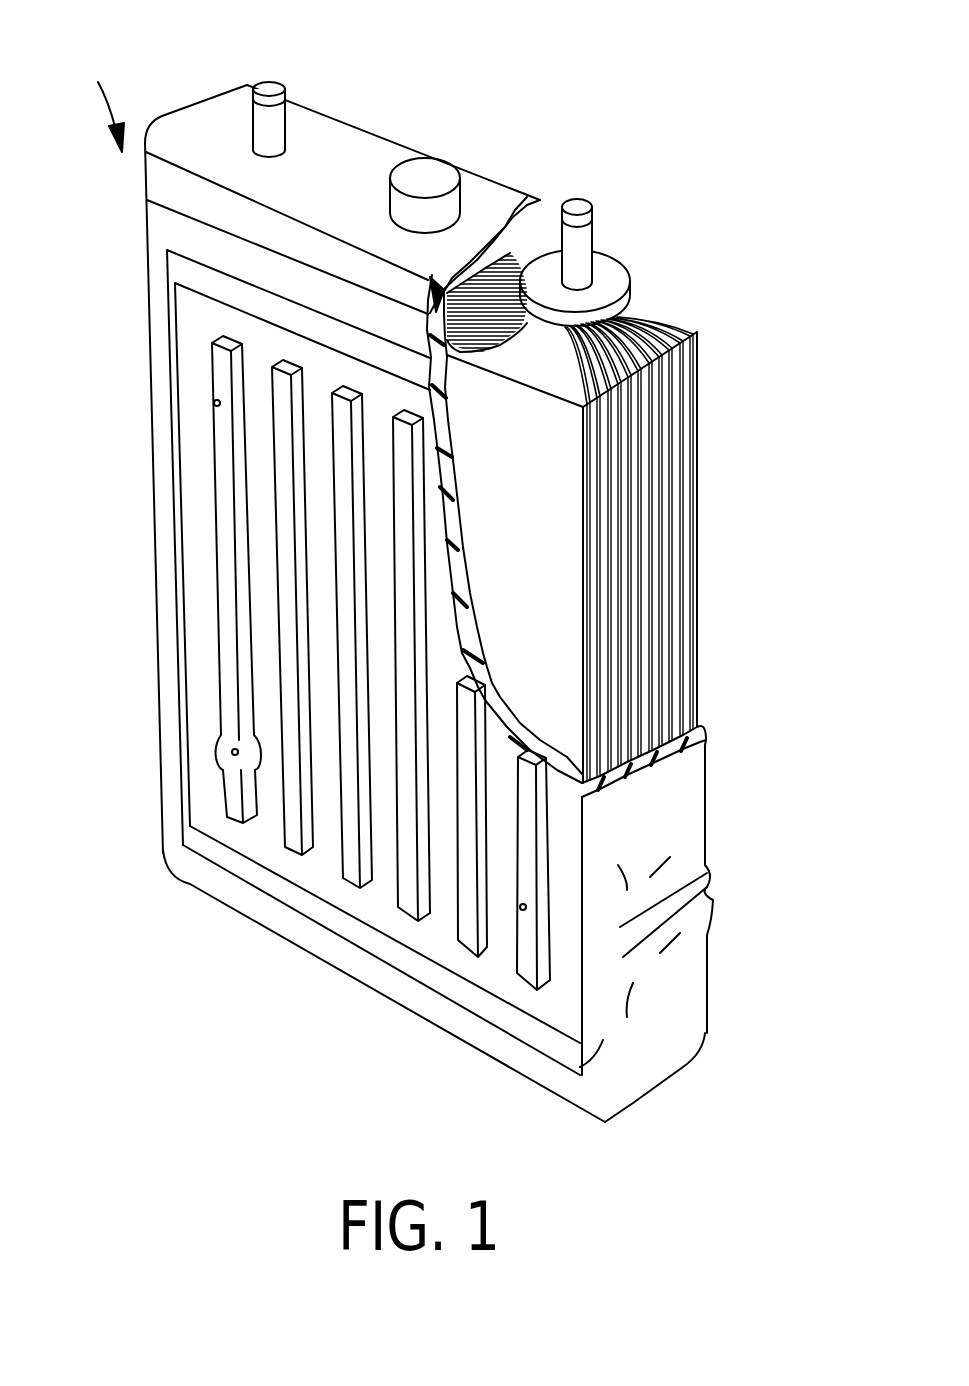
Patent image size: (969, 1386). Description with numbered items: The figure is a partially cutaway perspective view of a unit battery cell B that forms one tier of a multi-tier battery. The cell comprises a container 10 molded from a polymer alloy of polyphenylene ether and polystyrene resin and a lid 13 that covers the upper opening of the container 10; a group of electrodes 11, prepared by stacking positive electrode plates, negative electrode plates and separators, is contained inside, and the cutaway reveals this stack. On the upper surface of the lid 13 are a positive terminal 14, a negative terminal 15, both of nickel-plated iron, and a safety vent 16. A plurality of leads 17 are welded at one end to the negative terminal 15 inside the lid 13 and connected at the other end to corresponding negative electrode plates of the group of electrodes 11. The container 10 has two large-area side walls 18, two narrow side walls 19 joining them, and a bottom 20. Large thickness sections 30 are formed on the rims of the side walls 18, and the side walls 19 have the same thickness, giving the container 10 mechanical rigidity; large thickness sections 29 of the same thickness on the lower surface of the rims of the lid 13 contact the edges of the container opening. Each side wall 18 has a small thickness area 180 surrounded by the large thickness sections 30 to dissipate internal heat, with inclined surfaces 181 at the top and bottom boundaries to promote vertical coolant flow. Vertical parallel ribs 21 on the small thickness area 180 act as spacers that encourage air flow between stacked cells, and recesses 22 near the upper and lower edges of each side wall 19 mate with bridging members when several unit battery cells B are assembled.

The container 10 is at (143, 207).
The group of electrodes 11 is at (697, 420).
The lid 13 is at (375, 142).
The positive terminal 14 is at (270, 88).
The negative terminal 15 is at (581, 199).
The safety vent 16 is at (440, 172).
The leads 17 is at (550, 350).
The side wall 18 is at (203, 720).
The side wall 19 is at (693, 800).
The bottom 20 is at (688, 1067).
The ribs 21 is at (227, 545).
The recesses 22 is at (707, 873).
The large thickness sections 29 is at (298, 235).
The large thickness sections 30 is at (223, 250).
The small thickness area 180 is at (263, 602).
The inclined surfaces 181 is at (183, 268).
The unit battery cell B is at (104, 98).